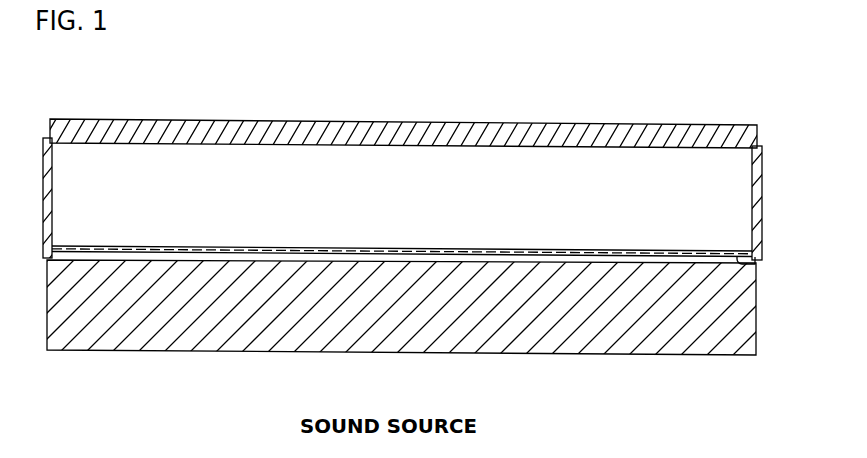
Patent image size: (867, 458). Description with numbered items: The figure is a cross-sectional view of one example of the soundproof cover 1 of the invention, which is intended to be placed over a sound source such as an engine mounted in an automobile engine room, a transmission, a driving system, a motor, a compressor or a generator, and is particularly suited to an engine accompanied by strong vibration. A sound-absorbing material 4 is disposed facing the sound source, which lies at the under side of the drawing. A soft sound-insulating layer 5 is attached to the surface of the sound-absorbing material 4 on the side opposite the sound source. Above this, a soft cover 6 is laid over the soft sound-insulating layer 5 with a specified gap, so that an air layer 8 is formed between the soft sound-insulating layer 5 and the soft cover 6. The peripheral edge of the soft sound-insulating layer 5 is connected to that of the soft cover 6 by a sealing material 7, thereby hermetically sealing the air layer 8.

The soundproof cover 1 is at (694, 109).
The sound-absorbing material 4 is at (757, 308).
The soft sound-insulating layer 5 is at (757, 264).
The soft cover 6 is at (757, 136).
The sealing material 7 is at (763, 177).
The air layer 8 is at (738, 216).